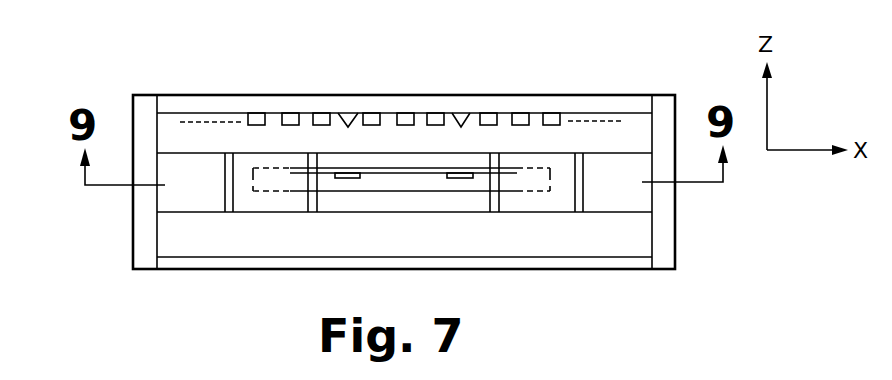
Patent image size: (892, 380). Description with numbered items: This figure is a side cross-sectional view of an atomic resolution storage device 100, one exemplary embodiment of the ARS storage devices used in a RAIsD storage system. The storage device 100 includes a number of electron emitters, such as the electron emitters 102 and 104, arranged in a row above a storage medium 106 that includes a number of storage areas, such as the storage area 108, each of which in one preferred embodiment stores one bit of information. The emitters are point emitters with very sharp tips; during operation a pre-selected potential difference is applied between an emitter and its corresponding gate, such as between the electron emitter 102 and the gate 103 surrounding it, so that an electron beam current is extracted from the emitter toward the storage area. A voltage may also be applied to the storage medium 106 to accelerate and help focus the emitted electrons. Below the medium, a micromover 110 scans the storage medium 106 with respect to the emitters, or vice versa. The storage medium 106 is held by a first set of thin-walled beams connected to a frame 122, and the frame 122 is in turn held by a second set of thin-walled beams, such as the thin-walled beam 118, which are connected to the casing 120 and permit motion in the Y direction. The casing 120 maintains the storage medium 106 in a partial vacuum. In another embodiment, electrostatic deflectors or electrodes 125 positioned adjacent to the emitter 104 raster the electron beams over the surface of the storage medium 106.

The atomic resolution storage device 100 is at (88, 76).
The electron emitter 102 is at (350, 115).
The gate 103 is at (326, 113).
The electron emitter 104 is at (462, 113).
The storage medium 106 is at (262, 193).
The storage area 108 is at (337, 172).
The micromover 110 is at (198, 213).
The thin-walled beam 118 is at (633, 180).
The casing 120 is at (662, 238).
The frame 122 is at (568, 160).
The electrostatic deflectors or electrodes 125 is at (405, 113).